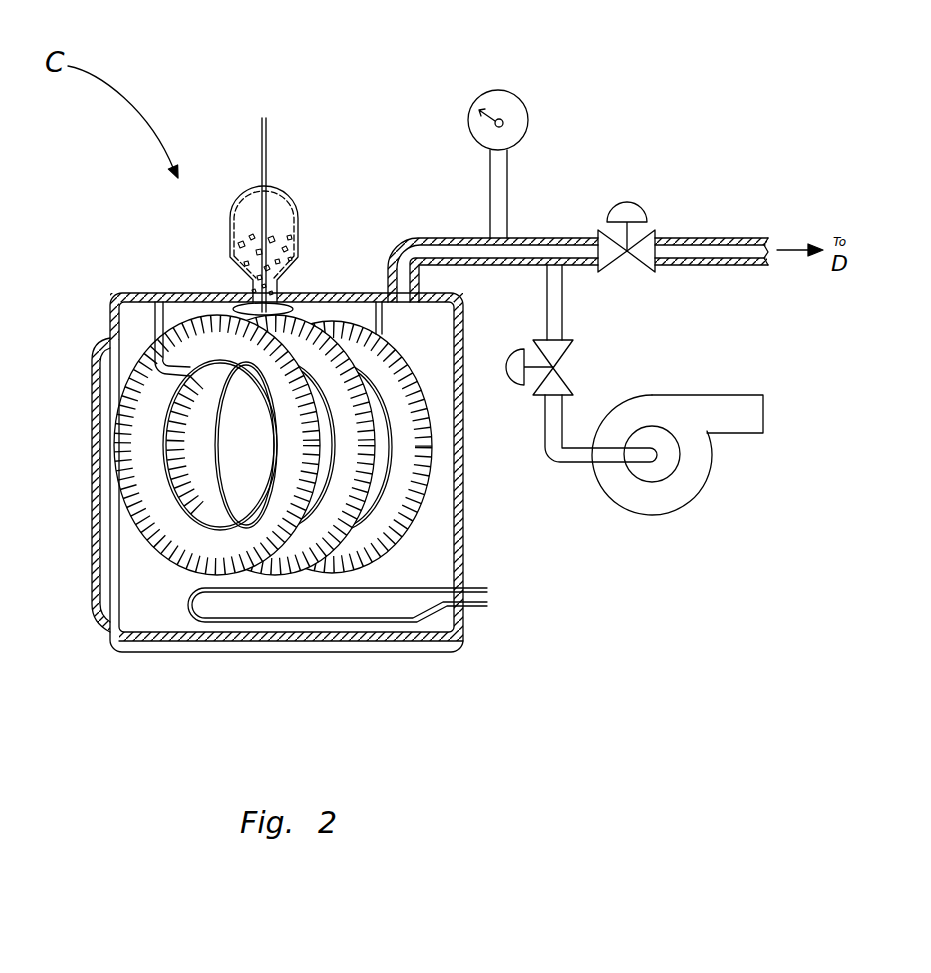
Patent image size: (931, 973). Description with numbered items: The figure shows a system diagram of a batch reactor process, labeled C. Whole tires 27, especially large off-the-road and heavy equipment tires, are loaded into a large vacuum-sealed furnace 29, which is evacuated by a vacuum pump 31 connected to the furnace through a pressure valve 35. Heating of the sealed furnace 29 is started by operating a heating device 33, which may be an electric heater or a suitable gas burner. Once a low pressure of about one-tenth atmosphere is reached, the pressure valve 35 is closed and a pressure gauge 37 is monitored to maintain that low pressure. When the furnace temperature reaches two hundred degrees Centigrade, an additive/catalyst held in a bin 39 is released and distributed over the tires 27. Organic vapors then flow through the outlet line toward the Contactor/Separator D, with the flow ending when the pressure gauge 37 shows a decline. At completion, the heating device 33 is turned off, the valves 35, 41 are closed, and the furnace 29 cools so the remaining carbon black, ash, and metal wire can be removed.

The whole tires 27 is at (410, 517).
The vacuum-sealed furnace 29 is at (168, 655).
The vacuum pump 31 is at (697, 490).
The heating device 33 is at (318, 625).
The pressure valve 35 is at (518, 385).
The pressure gauge 37 is at (516, 93).
The bin 39 is at (285, 188).
The valve 41 is at (633, 202).